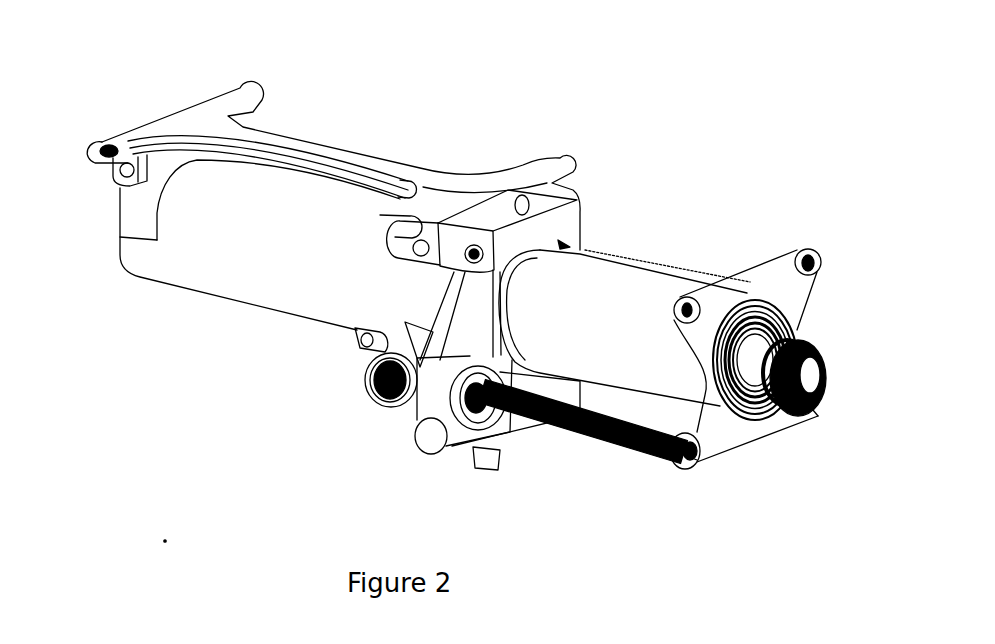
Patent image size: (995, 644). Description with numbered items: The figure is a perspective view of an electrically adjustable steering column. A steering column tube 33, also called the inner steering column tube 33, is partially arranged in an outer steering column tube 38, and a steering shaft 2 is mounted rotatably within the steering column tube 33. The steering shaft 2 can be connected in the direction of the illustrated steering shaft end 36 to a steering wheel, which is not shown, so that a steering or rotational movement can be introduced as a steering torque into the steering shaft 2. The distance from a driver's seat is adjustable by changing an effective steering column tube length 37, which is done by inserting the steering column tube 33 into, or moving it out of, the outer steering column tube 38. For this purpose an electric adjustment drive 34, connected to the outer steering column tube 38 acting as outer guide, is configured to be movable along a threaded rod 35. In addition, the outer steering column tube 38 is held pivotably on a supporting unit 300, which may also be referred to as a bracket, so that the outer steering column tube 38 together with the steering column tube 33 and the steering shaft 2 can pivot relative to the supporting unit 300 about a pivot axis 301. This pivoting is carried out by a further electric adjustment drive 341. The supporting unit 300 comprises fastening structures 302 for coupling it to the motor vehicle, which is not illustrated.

The steering shaft 2 is at (807, 322).
The supporting unit 300 is at (347, 163).
The pivot axis 301 is at (117, 180).
The fastening structures 302 is at (110, 142).
The steering column tube 33 is at (655, 355).
The electric adjustment drive 34 is at (400, 450).
The further electric adjustment drive 341 is at (365, 406).
The threaded rod 35 is at (582, 422).
The steering shaft end 36 is at (783, 418).
The effective steering column tube length 37 is at (667, 273).
The outer steering column tube 38 is at (250, 267).